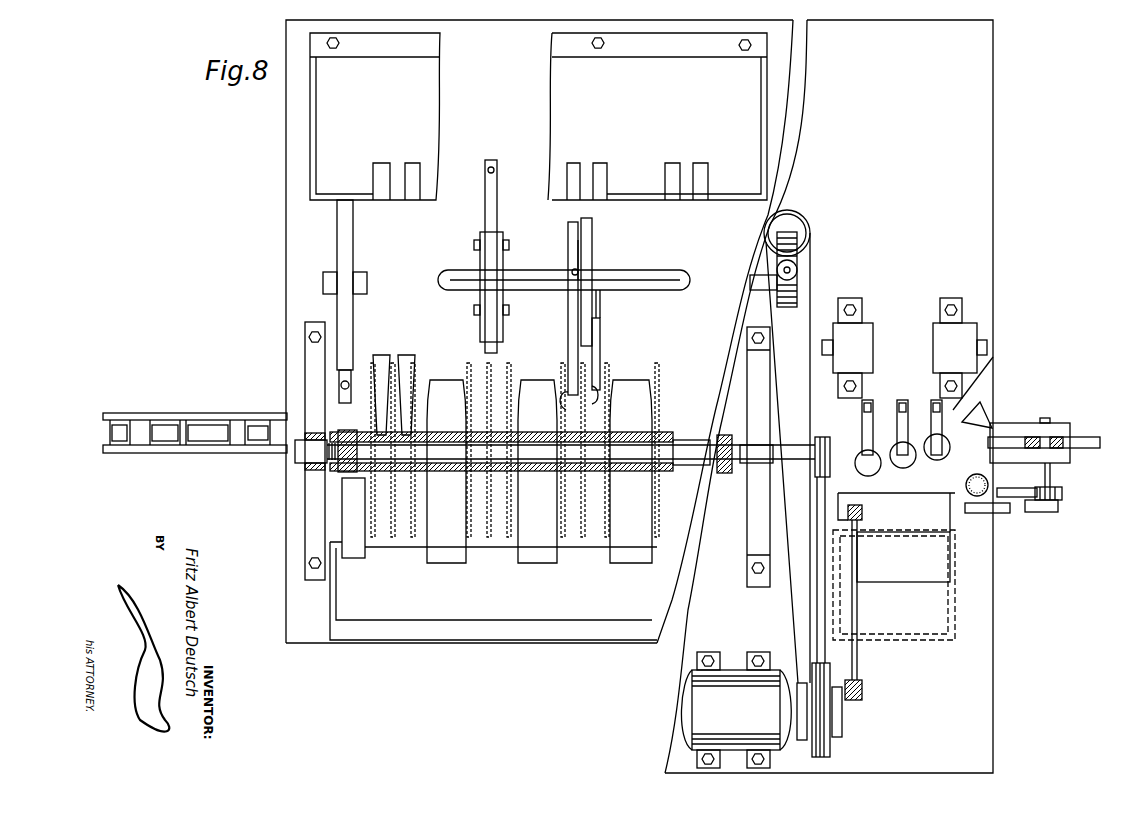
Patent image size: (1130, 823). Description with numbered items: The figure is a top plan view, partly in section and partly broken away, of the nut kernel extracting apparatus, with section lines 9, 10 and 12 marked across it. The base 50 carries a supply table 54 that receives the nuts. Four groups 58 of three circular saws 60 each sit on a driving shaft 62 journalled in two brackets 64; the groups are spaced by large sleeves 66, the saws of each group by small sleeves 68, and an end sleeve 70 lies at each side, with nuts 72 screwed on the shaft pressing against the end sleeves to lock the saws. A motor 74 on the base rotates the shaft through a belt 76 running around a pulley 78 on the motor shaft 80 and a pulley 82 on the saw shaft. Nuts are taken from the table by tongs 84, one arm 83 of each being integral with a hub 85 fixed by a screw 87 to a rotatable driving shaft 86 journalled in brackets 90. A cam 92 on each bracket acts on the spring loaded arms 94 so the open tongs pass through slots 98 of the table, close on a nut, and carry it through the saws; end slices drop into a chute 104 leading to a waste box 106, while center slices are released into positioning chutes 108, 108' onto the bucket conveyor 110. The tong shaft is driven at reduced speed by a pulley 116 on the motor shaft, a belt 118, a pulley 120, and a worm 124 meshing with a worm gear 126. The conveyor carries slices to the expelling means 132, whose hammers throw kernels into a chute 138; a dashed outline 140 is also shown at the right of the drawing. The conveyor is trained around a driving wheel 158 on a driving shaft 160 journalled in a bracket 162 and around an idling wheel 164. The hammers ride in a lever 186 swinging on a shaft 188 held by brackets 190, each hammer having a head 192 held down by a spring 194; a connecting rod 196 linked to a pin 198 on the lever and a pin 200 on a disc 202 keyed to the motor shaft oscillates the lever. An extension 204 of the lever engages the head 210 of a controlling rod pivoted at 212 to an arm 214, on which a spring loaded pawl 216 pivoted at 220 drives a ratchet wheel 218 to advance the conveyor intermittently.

The section line 9- 9 is at (373, 22).
The section line 10- 10 is at (822, 17).
The section line 12- 12 is at (970, 253).
The base 50 is at (458, 646).
The supply table 54 is at (548, 72).
The groups of circular saws 58 is at (395, 553).
The circular saws 60 is at (488, 512).
The driving shaft 62 is at (530, 446).
The brackets 64 is at (314, 522).
The large sleeves 66 is at (452, 432).
The small sleeves 68 is at (360, 497).
The end sleeve 70 is at (360, 480).
The nuts 72 is at (356, 418).
The motor 74 is at (705, 718).
The belt 76 is at (822, 640).
The pulley 78 is at (815, 760).
The shaft of the motor 80 is at (855, 610).
The pulley 82 is at (860, 428).
The arm 83 is at (568, 240).
The tongs 84 is at (568, 392).
The hub 85 is at (572, 258).
The driving shaft 86 is at (640, 272).
The screw 87 is at (566, 268).
The brackets 90 is at (345, 232).
The cam 92 is at (480, 262).
The spring loaded arms 94 is at (568, 335).
The slots 98 is at (410, 168).
The chute 104 is at (430, 562).
The waste box 106 is at (511, 628).
The positioning chute 108 is at (389, 380).
The positioning chute 108' is at (422, 383).
The bucket conveyor 110 is at (168, 413).
The pulley 116 is at (800, 748).
The belt 118 is at (806, 368).
The pulley 120 is at (796, 220).
The worm 124 is at (798, 265).
The worm gear 126 is at (800, 290).
The expelling means 132 is at (978, 410).
The chute 138 is at (945, 575).
The housing 140 is at (912, 628).
The driving wheel 158 is at (1090, 433).
The driving shaft 160 is at (1045, 416).
The bracket 162 is at (1005, 440).
The idling wheel 164 is at (140, 425).
The lever 186 is at (991, 379).
The shaft 188 is at (988, 345).
The brackets 190 is at (942, 333).
The head 192 is at (930, 460).
The spring 194 is at (902, 440).
The connecting rod 196 is at (858, 530).
The pin 198 is at (863, 512).
The pin 200 is at (858, 700).
The disc 202 is at (842, 725).
The extension 204 is at (1052, 478).
The head 210 is at (966, 485).
The pivot 212 is at (1000, 497).
The arm 214 is at (1045, 512).
The spring loaded pawl 216 is at (1030, 512).
The ratchet wheel 218 is at (1062, 496).
The pivot 220 is at (1025, 510).